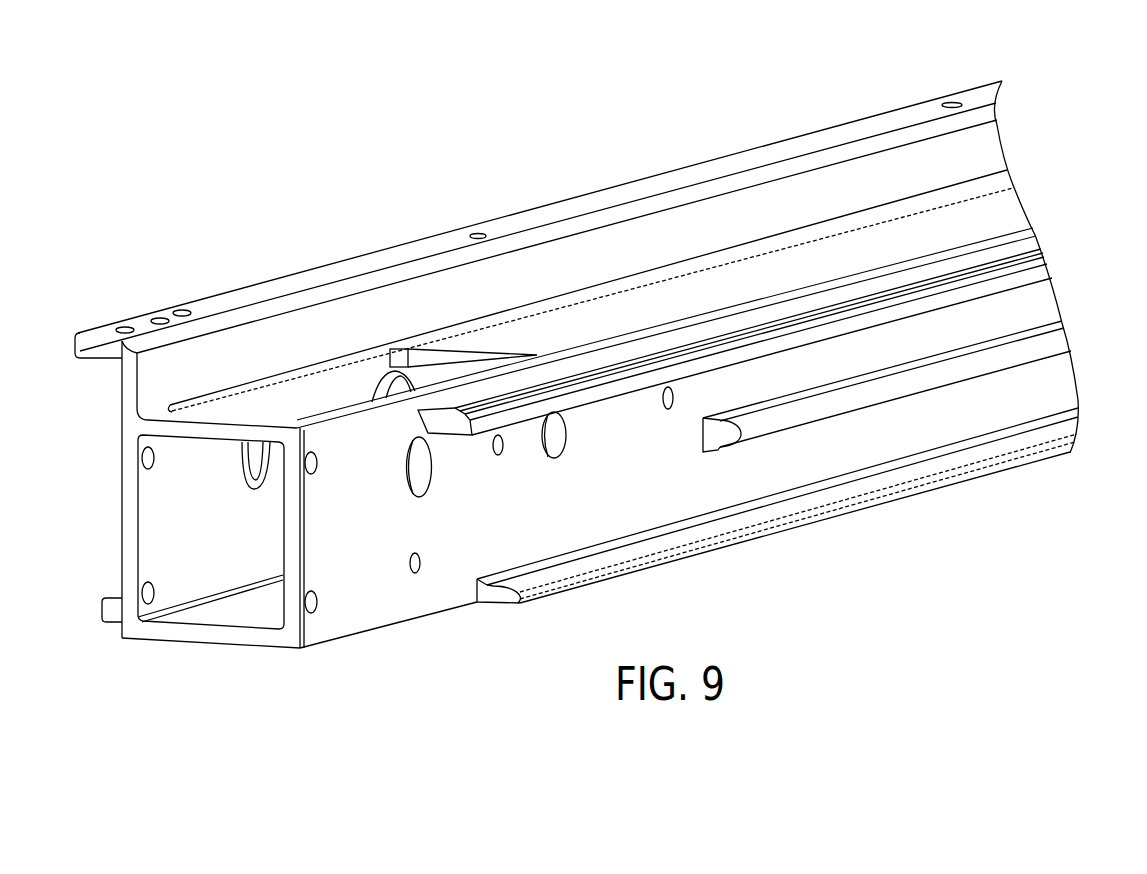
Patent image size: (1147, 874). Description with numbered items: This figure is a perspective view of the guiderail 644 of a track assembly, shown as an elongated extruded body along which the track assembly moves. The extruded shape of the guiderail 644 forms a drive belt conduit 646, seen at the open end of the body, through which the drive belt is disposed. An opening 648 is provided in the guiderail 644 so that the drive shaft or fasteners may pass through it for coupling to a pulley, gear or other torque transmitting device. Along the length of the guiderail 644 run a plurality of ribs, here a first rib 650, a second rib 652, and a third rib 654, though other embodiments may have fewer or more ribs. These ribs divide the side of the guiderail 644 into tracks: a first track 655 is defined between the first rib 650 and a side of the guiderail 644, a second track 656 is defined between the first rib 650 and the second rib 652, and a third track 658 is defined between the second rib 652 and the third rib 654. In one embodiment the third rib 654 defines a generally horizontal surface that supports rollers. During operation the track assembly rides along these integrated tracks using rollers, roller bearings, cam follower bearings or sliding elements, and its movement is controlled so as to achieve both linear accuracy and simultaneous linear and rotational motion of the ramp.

The guiderail 644 is at (262, 213).
The drive belt conduit 646 is at (236, 567).
The opening 648 is at (410, 472).
The first rib 650 is at (1040, 262).
The second rib 652 is at (1057, 350).
The third rib 654 is at (1053, 445).
The first track 655 is at (437, 417).
The second track 656 is at (1024, 306).
The third track 658 is at (1042, 391).